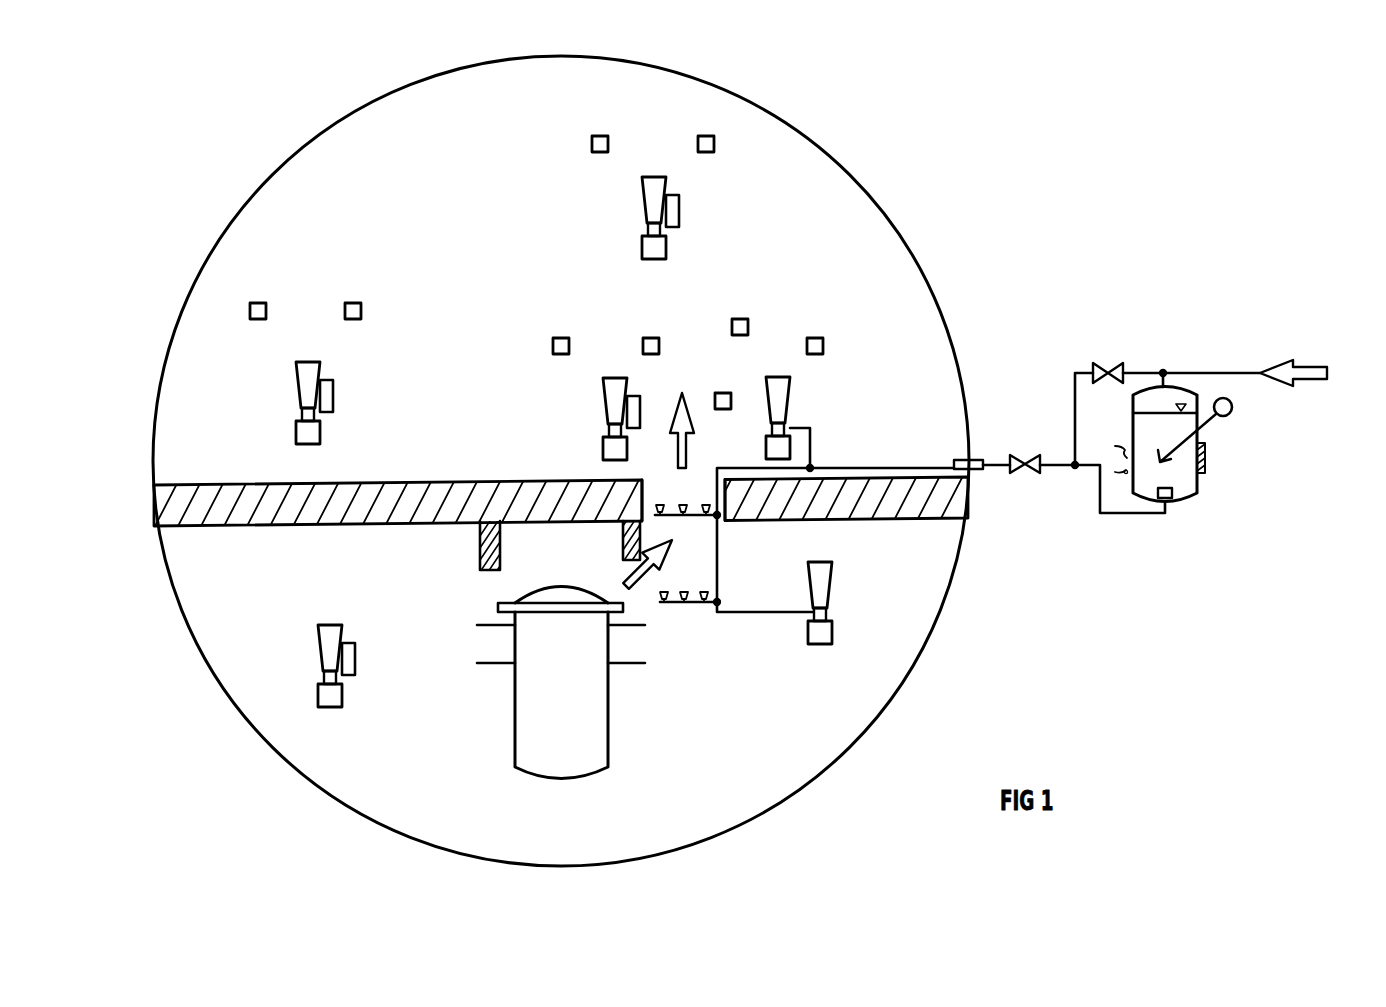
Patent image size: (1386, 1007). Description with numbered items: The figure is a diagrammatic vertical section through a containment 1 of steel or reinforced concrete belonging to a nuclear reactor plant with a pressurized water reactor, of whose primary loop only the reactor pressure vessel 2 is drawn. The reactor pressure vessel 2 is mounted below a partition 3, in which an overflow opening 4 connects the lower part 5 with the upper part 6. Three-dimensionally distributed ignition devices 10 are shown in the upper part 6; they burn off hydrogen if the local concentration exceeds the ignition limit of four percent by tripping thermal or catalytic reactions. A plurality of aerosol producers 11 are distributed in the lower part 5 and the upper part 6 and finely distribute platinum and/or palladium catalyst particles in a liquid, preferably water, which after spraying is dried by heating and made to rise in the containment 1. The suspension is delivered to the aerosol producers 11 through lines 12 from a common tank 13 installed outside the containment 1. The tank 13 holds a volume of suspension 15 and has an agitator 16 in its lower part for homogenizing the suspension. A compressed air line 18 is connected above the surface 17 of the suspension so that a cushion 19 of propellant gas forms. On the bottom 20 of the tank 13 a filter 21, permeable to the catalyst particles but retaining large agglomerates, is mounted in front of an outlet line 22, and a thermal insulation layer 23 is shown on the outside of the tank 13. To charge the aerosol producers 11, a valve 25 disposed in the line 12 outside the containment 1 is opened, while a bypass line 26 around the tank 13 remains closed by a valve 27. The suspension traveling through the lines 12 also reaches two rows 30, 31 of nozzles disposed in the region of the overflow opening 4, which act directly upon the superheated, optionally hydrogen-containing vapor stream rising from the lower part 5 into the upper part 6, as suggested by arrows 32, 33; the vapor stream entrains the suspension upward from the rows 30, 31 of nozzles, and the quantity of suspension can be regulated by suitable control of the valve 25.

The containment 1 is at (915, 252).
The reactor pressure vessel 2 is at (610, 742).
The partition 3 is at (283, 505).
The overflow opening 4 is at (652, 488).
The lower part 5 is at (441, 792).
The upper part 6 is at (466, 142).
The ignition devices 10 is at (608, 140).
The aerosol producers 11 is at (650, 194).
The lines 12 is at (912, 467).
The tank 13 is at (1198, 478).
The volume of suspension 15 is at (1182, 482).
The agitator 16 is at (1195, 440).
The surface of the suspension 17 is at (1152, 414).
The compressed air line 18 is at (1207, 373).
The cushion of propellant gas 19 is at (1152, 398).
The bottom of the tank 20 is at (1183, 497).
The filter 21 is at (1167, 500).
The outlet line 22 is at (1150, 514).
The thermal insulation layer 23 is at (1208, 463).
The valve 25 is at (1035, 472).
The bypass line 26 is at (1074, 428).
The valve 27 is at (1118, 343).
The row of nozzles 30 is at (690, 520).
The row of nozzles 31 is at (692, 604).
The arrow 32 is at (632, 572).
The arrow 33 is at (688, 452).